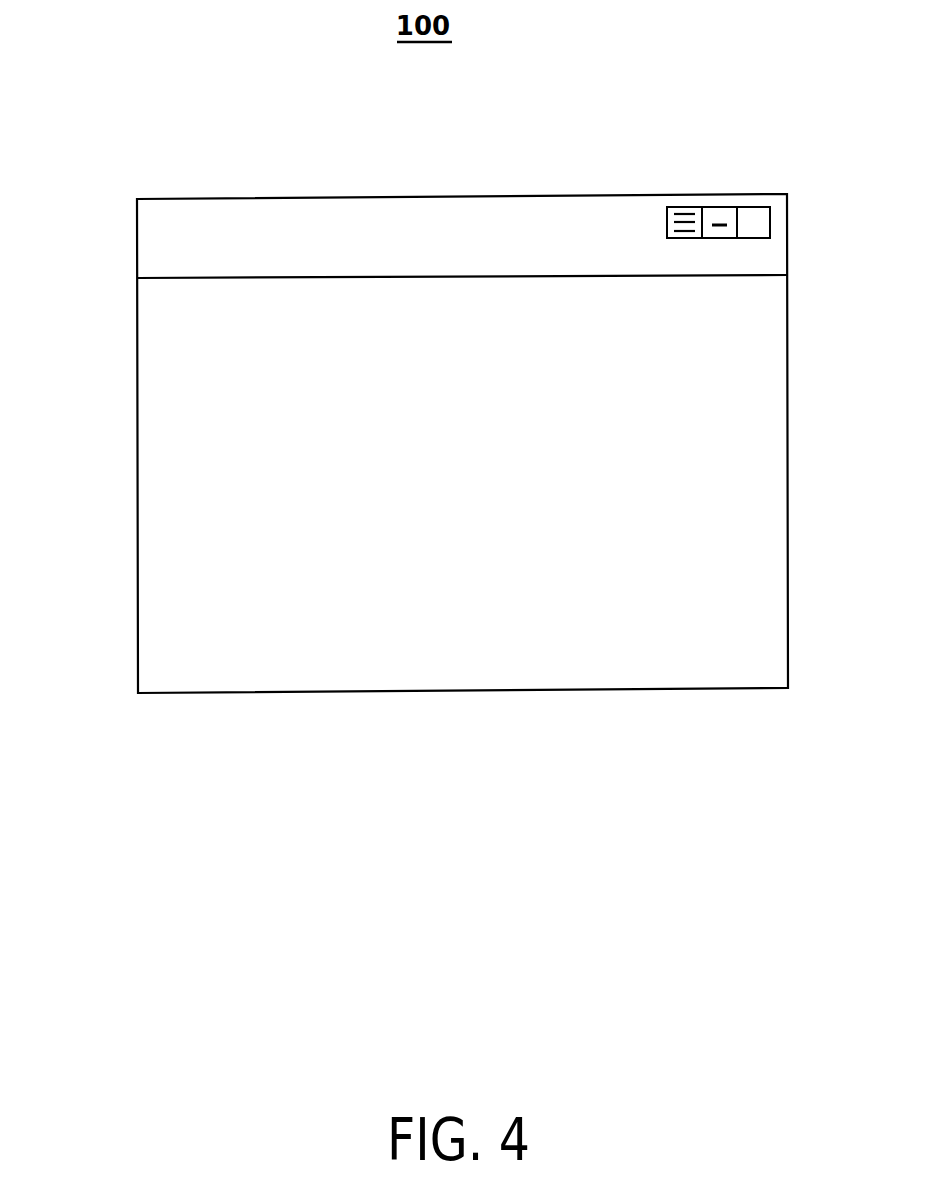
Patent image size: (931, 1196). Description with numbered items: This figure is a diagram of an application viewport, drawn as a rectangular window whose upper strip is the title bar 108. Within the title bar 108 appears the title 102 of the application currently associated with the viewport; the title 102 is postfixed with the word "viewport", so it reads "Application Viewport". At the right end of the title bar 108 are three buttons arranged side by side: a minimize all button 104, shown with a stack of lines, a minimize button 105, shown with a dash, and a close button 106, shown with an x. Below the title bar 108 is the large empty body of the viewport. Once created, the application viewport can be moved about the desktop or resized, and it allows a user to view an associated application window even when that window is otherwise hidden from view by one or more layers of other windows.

The title 102 is at (230, 210).
The minimize all button 104 is at (676, 207).
The minimize button 105 is at (717, 207).
The close button 106 is at (757, 206).
The title bar 108 is at (137, 227).